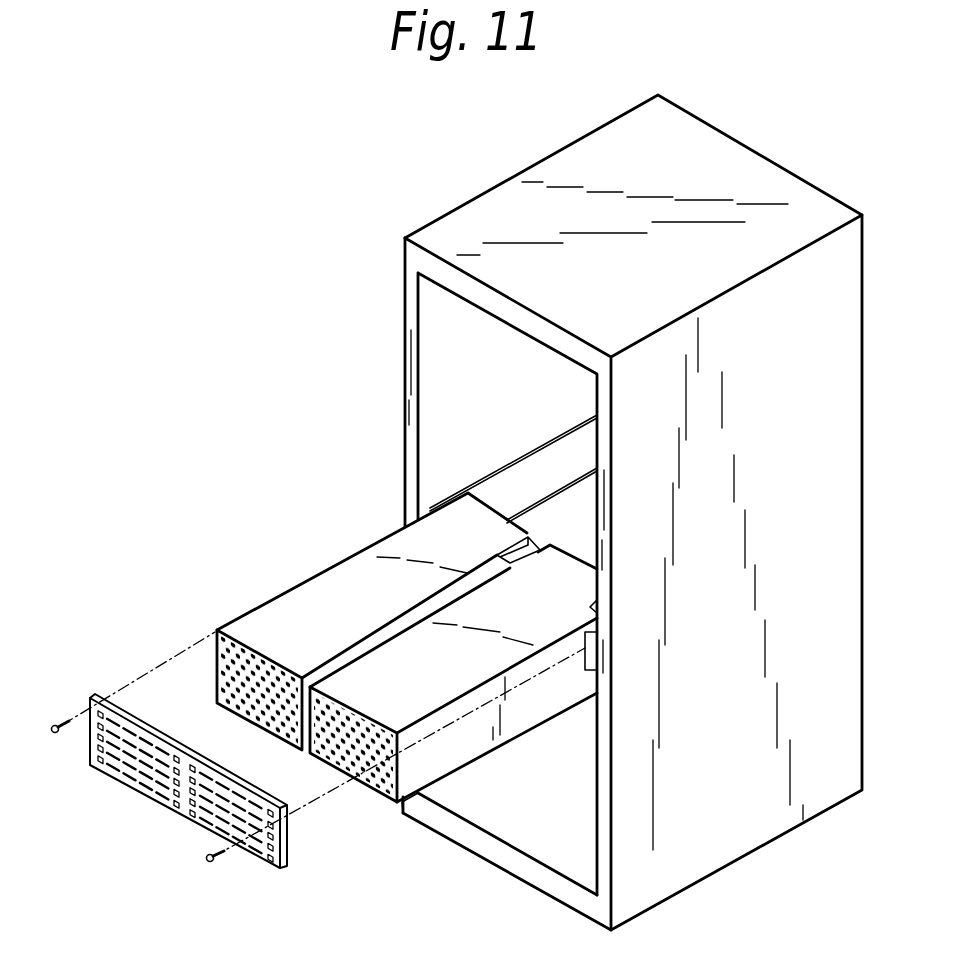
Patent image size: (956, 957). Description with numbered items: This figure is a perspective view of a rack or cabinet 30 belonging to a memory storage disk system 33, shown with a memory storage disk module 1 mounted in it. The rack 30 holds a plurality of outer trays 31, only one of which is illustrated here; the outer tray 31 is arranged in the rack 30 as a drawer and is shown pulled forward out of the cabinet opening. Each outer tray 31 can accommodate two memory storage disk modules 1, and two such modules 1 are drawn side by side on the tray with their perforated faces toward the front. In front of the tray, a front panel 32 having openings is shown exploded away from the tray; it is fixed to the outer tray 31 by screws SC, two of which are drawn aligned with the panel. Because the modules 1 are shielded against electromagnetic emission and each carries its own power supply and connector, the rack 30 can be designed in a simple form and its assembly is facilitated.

The memory storage disk system 33 is at (375, 190).
The rack 30 is at (548, 163).
The memory storage disk module 1 is at (367, 673).
The outer tray 31 is at (438, 770).
The front panel 32 is at (90, 755).
The screws SC is at (60, 712).